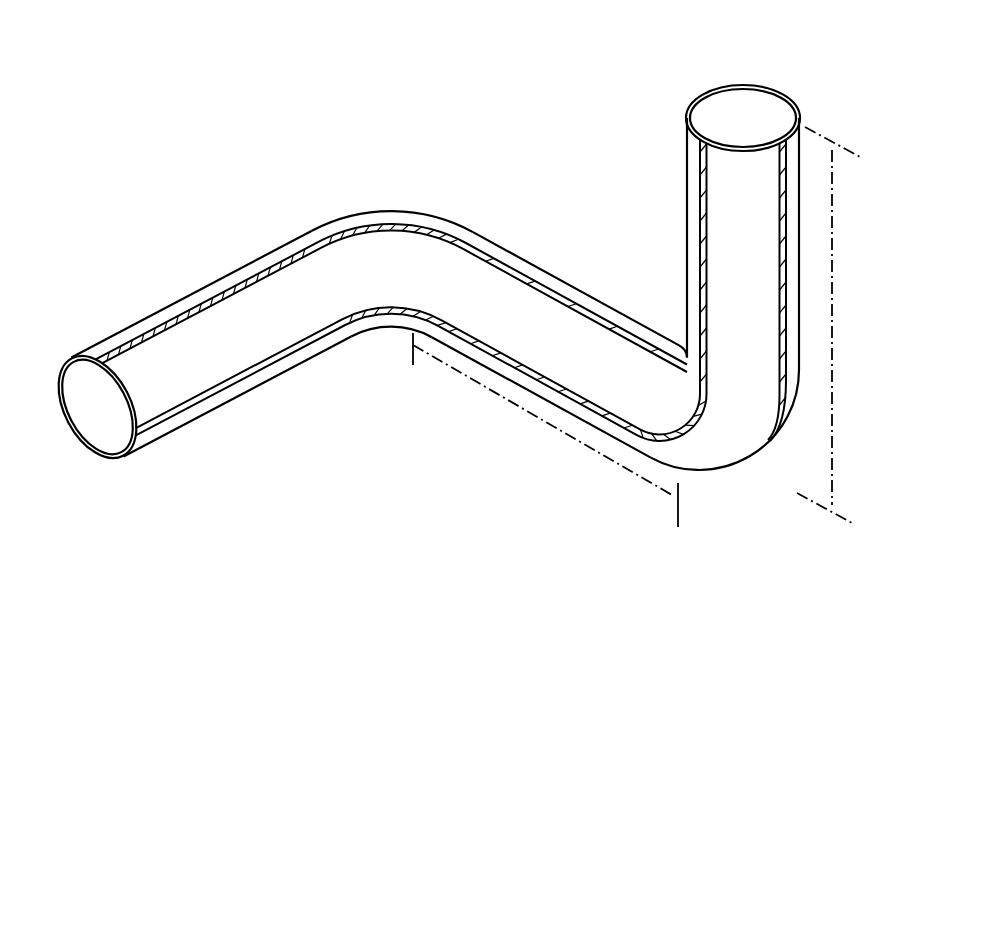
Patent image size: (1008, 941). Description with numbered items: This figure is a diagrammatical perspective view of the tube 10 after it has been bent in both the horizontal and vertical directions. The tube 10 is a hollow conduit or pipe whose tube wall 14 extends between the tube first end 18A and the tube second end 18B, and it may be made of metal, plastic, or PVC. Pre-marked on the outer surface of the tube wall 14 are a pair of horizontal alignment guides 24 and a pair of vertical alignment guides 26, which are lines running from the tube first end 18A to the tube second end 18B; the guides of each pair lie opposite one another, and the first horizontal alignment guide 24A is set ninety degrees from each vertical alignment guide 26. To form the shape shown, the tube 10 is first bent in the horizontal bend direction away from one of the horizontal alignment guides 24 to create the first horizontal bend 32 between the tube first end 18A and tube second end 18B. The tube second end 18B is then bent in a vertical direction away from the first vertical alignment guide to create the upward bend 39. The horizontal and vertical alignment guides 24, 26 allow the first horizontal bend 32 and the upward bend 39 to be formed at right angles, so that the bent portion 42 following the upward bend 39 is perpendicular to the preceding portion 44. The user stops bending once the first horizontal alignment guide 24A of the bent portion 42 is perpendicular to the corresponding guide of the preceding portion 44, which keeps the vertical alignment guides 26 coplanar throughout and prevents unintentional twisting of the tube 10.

The tube 10 is at (463, 458).
The tube wall 14 is at (450, 301).
The tube first end 18A is at (96, 455).
The tube second end 18B is at (794, 100).
The horizontal alignment guides 24 is at (167, 421).
The first horizontal alignment guide 24A is at (699, 160).
The vertical alignment guides 26 is at (150, 328).
The first horizontal bend 32 is at (375, 258).
The upward bend 39 is at (719, 492).
The bent portion 42 is at (831, 309).
The preceding portion 44 is at (578, 440).